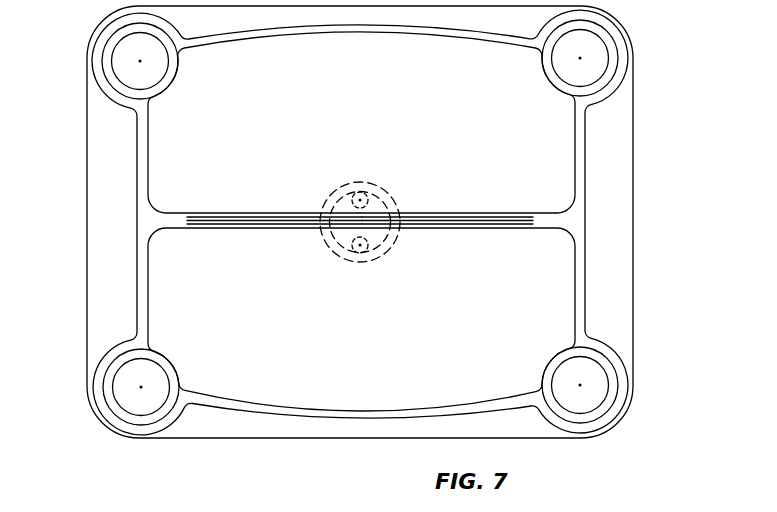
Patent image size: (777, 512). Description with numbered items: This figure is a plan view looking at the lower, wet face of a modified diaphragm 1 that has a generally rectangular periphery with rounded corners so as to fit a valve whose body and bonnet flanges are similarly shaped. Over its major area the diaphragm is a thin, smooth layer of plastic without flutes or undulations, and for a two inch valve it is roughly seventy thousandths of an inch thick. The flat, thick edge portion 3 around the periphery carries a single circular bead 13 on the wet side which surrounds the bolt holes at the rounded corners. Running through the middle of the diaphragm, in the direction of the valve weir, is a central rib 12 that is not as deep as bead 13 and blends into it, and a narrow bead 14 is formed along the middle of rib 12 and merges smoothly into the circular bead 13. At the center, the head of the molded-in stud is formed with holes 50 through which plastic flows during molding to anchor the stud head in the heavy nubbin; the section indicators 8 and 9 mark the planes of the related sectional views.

The plate 1 is at (634, 154).
The edge portion 3 is at (367, 229).
The circular bead 13 is at (145, 170).
The central rib 12 is at (218, 213).
The narrow bead 14 is at (470, 217).
The holes 50 is at (364, 198).
The section line 8- 8 is at (73, 220).
The hollows 9 is at (395, 459).